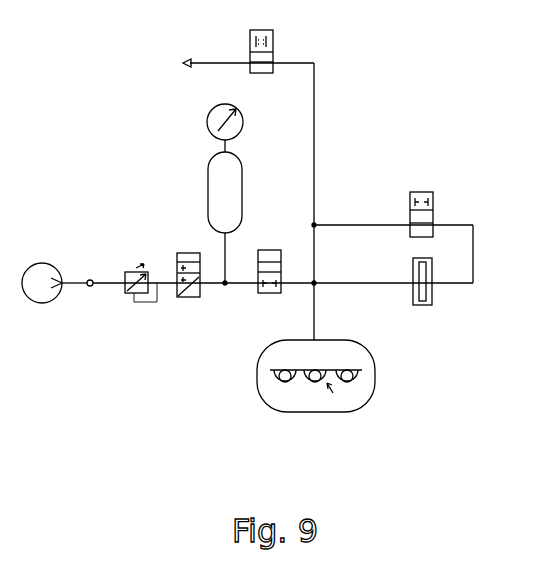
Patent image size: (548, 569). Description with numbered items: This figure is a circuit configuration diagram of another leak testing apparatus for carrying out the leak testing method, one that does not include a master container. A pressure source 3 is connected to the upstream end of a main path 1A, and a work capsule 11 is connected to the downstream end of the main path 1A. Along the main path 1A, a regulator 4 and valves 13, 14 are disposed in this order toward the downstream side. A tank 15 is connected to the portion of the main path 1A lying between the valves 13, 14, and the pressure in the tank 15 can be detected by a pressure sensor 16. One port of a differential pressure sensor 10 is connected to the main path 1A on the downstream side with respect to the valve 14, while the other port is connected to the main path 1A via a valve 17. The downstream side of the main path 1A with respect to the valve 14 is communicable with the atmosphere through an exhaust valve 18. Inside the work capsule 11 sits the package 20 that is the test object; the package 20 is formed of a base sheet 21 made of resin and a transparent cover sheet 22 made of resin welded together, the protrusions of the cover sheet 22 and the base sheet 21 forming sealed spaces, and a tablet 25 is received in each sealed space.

The pressure source 3 is at (41, 263).
The regulator 4 is at (129, 293).
The valve 13 is at (189, 297).
The main path 1A is at (240, 286).
The tank 15 is at (208, 196).
The pressure sensor 16 is at (207, 120).
The valve 14 is at (266, 250).
The exhaust valve 18 is at (275, 31).
The work capsule 11 is at (335, 340).
The valve 17 is at (423, 192).
The differential pressure sensor 10 is at (433, 296).
The package 20 is at (336, 394).
The base sheet 21 is at (325, 370).
The cover sheet 22 is at (352, 382).
The tablet 25 is at (318, 378).